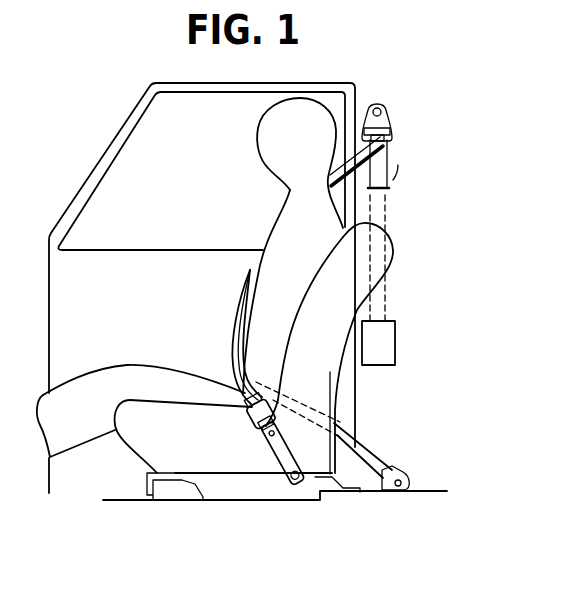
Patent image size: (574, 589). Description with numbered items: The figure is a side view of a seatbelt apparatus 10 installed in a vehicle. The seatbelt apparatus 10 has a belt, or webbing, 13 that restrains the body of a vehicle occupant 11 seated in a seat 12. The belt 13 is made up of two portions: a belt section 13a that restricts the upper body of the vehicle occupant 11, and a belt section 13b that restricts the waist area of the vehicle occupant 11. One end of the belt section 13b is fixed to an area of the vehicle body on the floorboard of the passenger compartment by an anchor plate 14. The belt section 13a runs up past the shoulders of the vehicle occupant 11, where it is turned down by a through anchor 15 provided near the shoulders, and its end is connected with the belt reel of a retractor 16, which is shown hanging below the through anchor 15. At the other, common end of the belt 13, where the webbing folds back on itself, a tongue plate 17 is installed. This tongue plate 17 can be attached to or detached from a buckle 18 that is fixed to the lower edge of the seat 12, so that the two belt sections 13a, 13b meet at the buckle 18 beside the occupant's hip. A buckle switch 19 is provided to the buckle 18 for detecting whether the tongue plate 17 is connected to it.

The seatbelt apparatus 10 is at (412, 333).
The vehicle occupant 11 is at (283, 242).
The seat 12 is at (327, 372).
The belt (webbing) 13 is at (222, 340).
The belt section 13a is at (378, 172).
The belt section 13b is at (360, 452).
The anchor plate 14 is at (405, 473).
The through anchor 15 is at (392, 127).
The retractor 16 is at (388, 332).
The tongue plate 17 is at (258, 413).
The buckle 18 is at (300, 427).
The buckle switch 19 is at (262, 447).